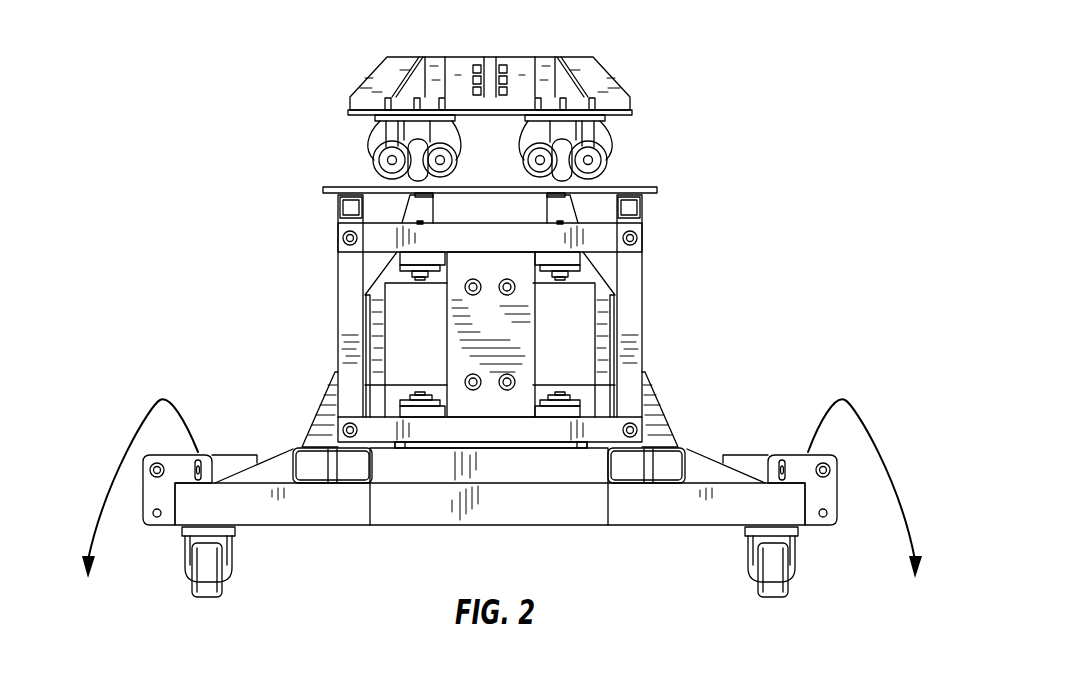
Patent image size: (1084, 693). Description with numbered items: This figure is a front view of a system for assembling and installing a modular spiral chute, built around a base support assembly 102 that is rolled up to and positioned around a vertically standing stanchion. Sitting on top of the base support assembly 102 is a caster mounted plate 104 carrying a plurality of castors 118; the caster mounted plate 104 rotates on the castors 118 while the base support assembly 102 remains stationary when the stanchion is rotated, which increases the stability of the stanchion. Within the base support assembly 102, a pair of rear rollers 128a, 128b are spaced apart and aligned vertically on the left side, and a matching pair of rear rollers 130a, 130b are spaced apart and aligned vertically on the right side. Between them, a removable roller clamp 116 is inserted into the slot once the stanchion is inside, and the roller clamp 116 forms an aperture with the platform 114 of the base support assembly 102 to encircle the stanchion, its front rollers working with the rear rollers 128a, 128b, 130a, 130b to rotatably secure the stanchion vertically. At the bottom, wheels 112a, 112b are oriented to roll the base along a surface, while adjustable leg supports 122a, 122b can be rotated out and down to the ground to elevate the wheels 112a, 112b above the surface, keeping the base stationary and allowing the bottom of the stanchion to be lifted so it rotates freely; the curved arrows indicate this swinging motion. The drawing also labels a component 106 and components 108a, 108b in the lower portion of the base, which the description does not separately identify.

The base support assembly 102 is at (645, 288).
The caster mounted plate 104 is at (598, 68).
The base beam 106 is at (447, 510).
The right outrigger support 108a is at (688, 450).
The left outrigger support 108b is at (302, 450).
The wheel 112a is at (770, 582).
The wheel 112b is at (208, 593).
The platform 114 is at (640, 190).
The removable roller clamp 116 is at (515, 344).
The castors 118 is at (388, 157).
The adjustable leg support 122a is at (827, 490).
The adjustable leg support 122b is at (167, 517).
The rear roller 128a is at (397, 253).
The rear roller 128b is at (407, 410).
The rear roller 130a is at (577, 257).
The rear roller 130b is at (577, 412).